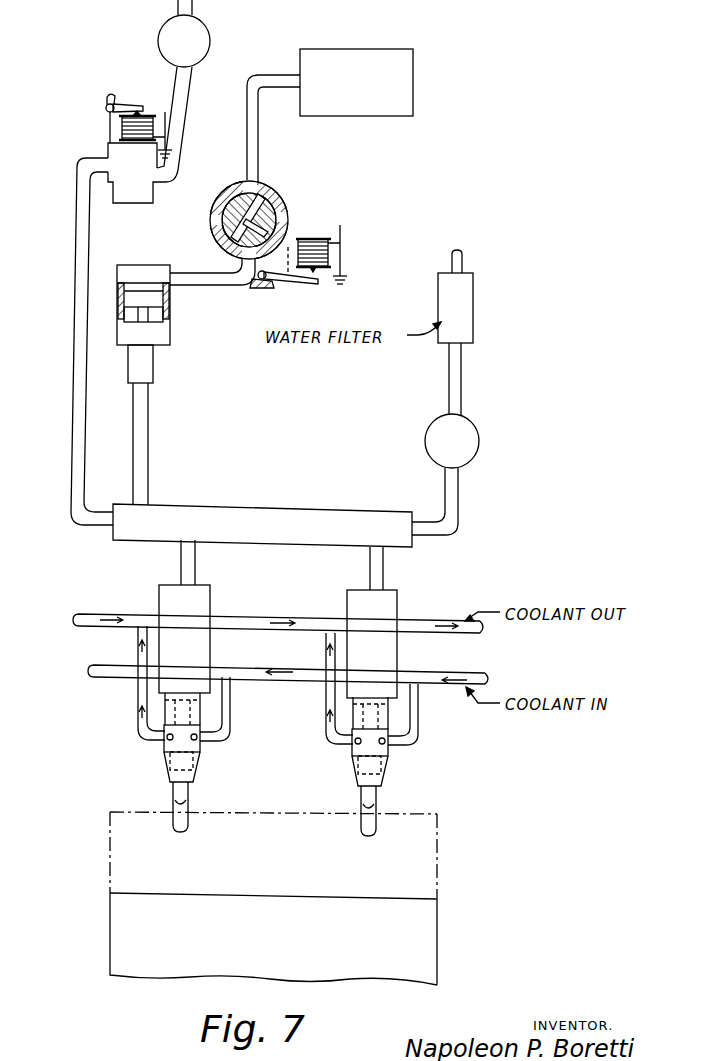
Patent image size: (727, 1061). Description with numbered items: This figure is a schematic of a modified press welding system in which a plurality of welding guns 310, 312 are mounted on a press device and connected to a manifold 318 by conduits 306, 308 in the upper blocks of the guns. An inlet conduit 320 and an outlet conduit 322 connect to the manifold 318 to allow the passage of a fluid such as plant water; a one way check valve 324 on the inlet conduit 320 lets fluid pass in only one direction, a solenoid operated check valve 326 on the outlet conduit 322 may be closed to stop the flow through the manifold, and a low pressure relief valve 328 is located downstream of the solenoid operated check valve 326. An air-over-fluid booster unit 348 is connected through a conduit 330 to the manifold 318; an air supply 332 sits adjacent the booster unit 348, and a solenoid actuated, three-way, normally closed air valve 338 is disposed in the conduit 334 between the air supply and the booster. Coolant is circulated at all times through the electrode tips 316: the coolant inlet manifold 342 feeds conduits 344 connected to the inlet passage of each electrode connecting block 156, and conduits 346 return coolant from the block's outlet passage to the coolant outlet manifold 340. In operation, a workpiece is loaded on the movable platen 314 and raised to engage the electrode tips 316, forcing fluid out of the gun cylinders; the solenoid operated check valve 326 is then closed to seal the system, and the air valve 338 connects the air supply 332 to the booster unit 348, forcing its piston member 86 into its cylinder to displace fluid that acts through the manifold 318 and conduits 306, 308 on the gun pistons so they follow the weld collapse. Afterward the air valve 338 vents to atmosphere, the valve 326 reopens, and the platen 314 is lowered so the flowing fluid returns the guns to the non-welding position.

The piston member 86 is at (157, 298).
The electrode connecting block 156 is at (170, 753).
The conduit 306 is at (187, 565).
The conduit 308 is at (378, 572).
The welding gun 310 is at (159, 606).
The welding gun 312 is at (347, 613).
The movable platen 314 is at (118, 930).
The electrode tips 316 is at (180, 815).
The manifold 318 is at (252, 523).
The inlet conduit 320 is at (455, 375).
The outlet conduit 322 is at (73, 400).
The one way check valve 324 is at (479, 440).
The solenoid operated check valve 326 is at (125, 158).
The low pressure relief valve 328 is at (158, 41).
The conduit 330 is at (145, 420).
The air supply 332 is at (405, 68).
The conduit 334 is at (258, 135).
The air valve 338 is at (285, 193).
The coolant outlet manifold 340 is at (83, 614).
The coolant inlet manifold 342 is at (125, 670).
The conduits 344 is at (225, 708).
The conduits 346 is at (138, 634).
The booster unit 348 is at (157, 332).